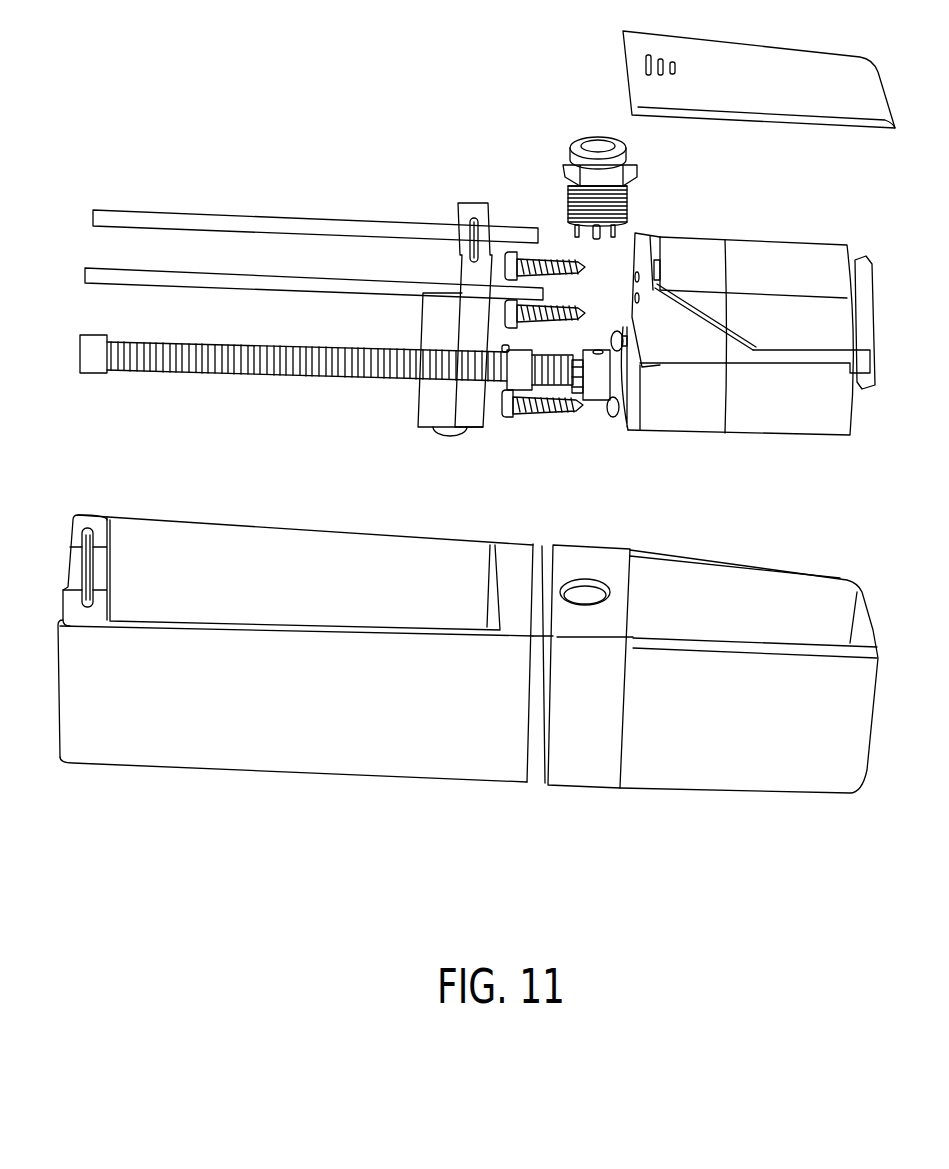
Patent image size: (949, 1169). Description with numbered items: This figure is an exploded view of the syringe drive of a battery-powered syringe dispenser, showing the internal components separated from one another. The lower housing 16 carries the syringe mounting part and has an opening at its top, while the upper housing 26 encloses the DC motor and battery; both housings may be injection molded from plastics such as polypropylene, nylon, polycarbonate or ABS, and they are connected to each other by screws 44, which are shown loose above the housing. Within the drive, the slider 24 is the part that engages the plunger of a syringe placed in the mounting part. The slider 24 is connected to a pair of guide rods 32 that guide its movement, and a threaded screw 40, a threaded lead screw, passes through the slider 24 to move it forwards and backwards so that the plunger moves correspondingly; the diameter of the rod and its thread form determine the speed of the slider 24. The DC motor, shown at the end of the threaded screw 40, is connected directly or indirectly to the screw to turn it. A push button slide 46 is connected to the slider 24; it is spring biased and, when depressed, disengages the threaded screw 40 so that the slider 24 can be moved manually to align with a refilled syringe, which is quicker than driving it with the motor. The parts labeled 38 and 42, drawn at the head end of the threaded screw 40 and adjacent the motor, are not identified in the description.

The lower housing 16 is at (292, 754).
The slider 24 is at (473, 201).
The upper housing 26 is at (735, 775).
The guide rods 32 is at (260, 273).
The screw head 38 is at (91, 374).
The threaded screw 40 is at (292, 382).
The coupling nut 42 is at (519, 393).
The screws 44 is at (584, 307).
The push button slide 46 is at (445, 437).